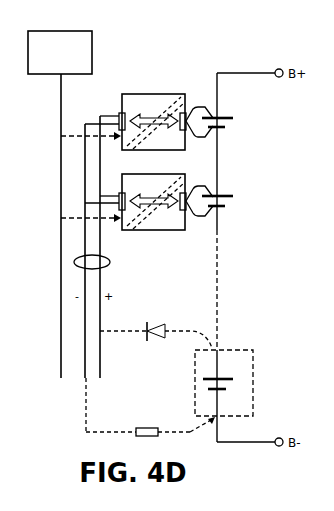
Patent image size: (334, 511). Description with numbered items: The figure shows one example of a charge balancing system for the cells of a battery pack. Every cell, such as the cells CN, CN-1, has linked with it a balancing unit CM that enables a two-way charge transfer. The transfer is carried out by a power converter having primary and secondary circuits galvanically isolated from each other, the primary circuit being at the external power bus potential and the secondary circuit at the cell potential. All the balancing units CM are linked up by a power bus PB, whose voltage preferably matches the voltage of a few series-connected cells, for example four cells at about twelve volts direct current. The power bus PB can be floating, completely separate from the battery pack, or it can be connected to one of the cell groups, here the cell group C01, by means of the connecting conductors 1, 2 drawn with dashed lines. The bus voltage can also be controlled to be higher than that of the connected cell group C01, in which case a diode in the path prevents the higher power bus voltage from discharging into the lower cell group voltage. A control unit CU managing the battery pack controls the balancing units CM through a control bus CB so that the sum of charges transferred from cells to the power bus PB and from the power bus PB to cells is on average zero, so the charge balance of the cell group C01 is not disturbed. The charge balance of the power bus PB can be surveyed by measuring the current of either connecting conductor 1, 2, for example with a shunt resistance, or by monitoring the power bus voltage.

The connecting conductor 1 is at (132, 338).
The connecting conductor 2 is at (129, 424).
The control unit CU is at (60, 52).
The control bus CB is at (73, 239).
The balancing unit CM is at (166, 154).
The power bus PB is at (110, 262).
The cell CN is at (229, 121).
The cell CN-1 is at (232, 199).
The cell group C01 is at (224, 375).